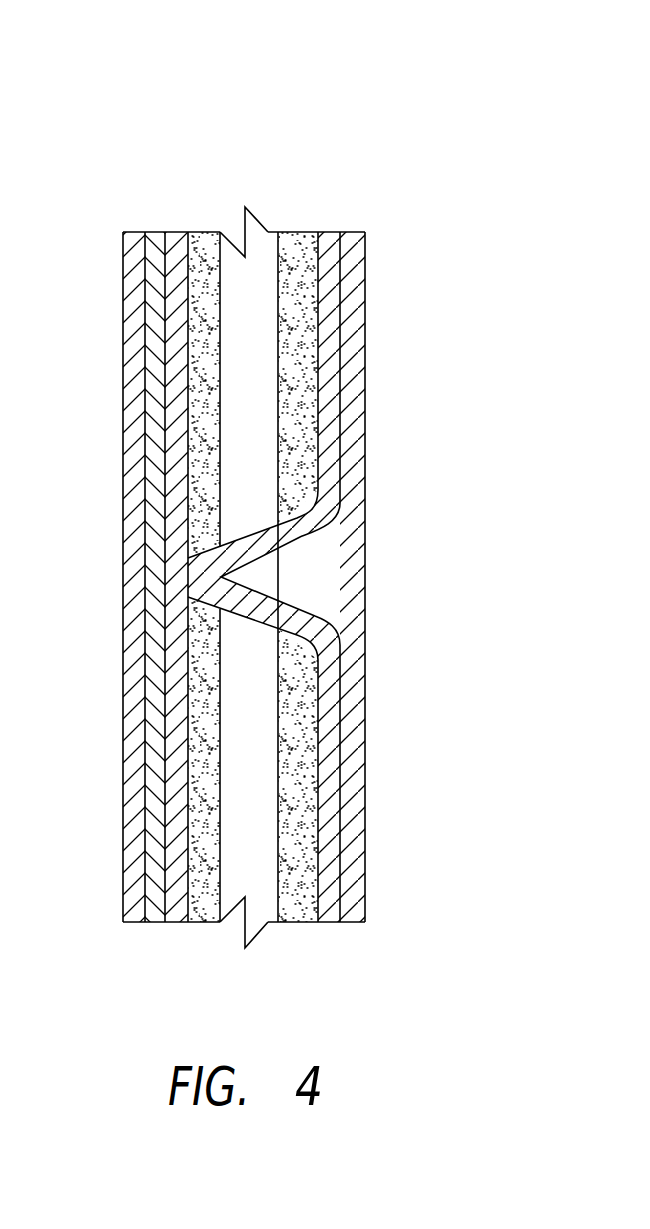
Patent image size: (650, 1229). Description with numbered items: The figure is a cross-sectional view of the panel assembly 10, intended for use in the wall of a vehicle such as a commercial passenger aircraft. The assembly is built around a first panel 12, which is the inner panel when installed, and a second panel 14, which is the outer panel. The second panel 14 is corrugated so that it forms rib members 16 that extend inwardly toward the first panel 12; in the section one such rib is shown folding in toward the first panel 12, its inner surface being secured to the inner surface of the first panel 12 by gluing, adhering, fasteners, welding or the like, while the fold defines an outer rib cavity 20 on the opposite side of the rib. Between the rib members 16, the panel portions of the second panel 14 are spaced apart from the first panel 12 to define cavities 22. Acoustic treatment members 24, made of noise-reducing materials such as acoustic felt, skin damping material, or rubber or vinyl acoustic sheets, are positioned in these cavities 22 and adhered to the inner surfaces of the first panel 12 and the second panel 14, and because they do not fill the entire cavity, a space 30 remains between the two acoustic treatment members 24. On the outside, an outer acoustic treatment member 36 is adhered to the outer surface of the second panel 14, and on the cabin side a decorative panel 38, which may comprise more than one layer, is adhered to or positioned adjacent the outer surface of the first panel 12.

The panel assembly 10 is at (483, 140).
The first panel 12 is at (177, 262).
The second panel 14 is at (327, 663).
The rib members 16 is at (203, 575).
The outer rib cavity 20 is at (260, 568).
The cavities 22 is at (264, 838).
The acoustic treatment members 24 is at (295, 890).
The space 30 is at (262, 404).
The outer acoustic treatment member 36 is at (353, 760).
The decorative panel 38 is at (153, 398).